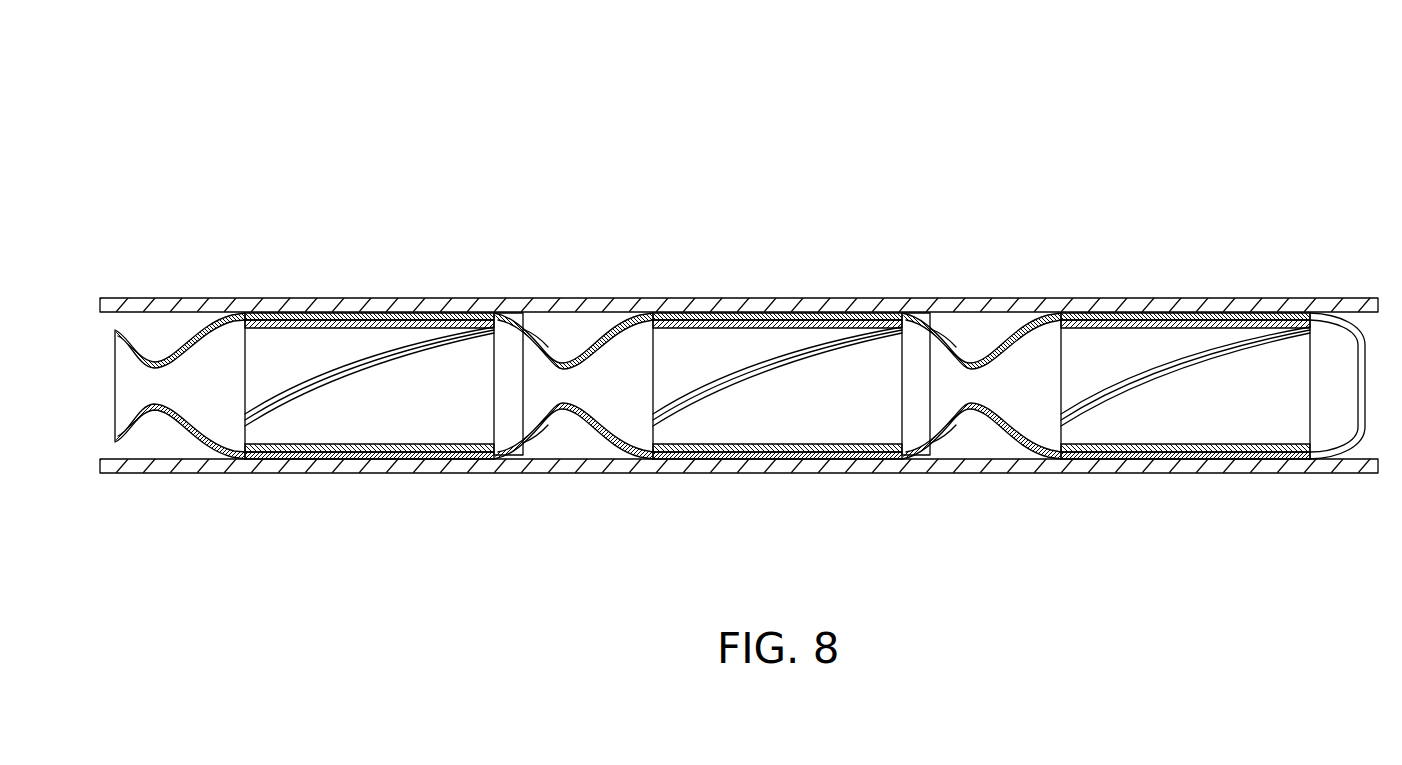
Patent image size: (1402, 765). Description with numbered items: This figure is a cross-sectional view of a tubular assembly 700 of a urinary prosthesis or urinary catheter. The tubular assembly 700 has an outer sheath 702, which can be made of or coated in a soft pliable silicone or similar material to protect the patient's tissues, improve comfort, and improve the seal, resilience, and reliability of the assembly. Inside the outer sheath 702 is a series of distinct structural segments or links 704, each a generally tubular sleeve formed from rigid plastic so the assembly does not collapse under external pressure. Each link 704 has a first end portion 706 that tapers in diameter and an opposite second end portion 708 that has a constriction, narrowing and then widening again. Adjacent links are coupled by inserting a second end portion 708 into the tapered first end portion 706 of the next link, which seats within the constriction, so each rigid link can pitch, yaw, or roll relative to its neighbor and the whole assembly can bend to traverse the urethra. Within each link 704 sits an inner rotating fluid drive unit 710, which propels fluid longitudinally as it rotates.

The tubular assembly 700 is at (394, 122).
The outer sheath 702 is at (745, 298).
The link 704 is at (150, 327).
The first end portion 706 is at (510, 350).
The second end portion 708 is at (205, 380).
The inner rotating fluid drive unit 710 is at (375, 418).